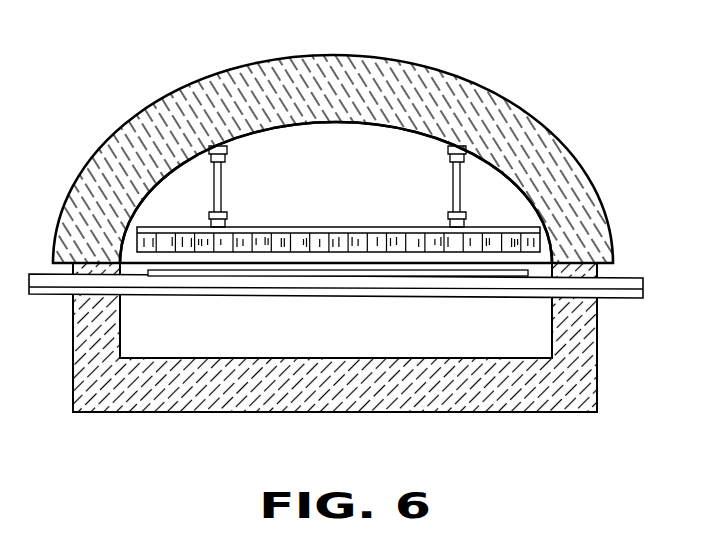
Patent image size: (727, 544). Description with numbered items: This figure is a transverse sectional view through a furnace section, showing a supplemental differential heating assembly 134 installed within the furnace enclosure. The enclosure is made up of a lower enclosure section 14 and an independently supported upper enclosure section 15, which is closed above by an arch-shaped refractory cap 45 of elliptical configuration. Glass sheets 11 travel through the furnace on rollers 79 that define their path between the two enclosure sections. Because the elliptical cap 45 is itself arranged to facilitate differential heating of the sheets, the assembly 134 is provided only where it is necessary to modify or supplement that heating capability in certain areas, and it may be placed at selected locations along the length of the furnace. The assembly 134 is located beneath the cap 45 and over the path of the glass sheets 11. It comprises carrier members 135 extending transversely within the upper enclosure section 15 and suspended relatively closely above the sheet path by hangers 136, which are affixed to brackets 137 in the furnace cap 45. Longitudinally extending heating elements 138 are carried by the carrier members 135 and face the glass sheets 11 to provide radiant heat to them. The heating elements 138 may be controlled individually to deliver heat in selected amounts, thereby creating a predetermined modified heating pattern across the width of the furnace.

The upper enclosure section 15 is at (514, 88).
The refractory cap 45 is at (338, 108).
The lower enclosure section 14 is at (143, 416).
The rollers 79 is at (446, 304).
The glass sheets 11 is at (322, 278).
The supplemental differential heating assembly 134 is at (375, 220).
The carrier members 135 is at (318, 227).
The heating elements 138 is at (238, 252).
The hangers 136 is at (221, 185).
The brackets 137 is at (210, 158).